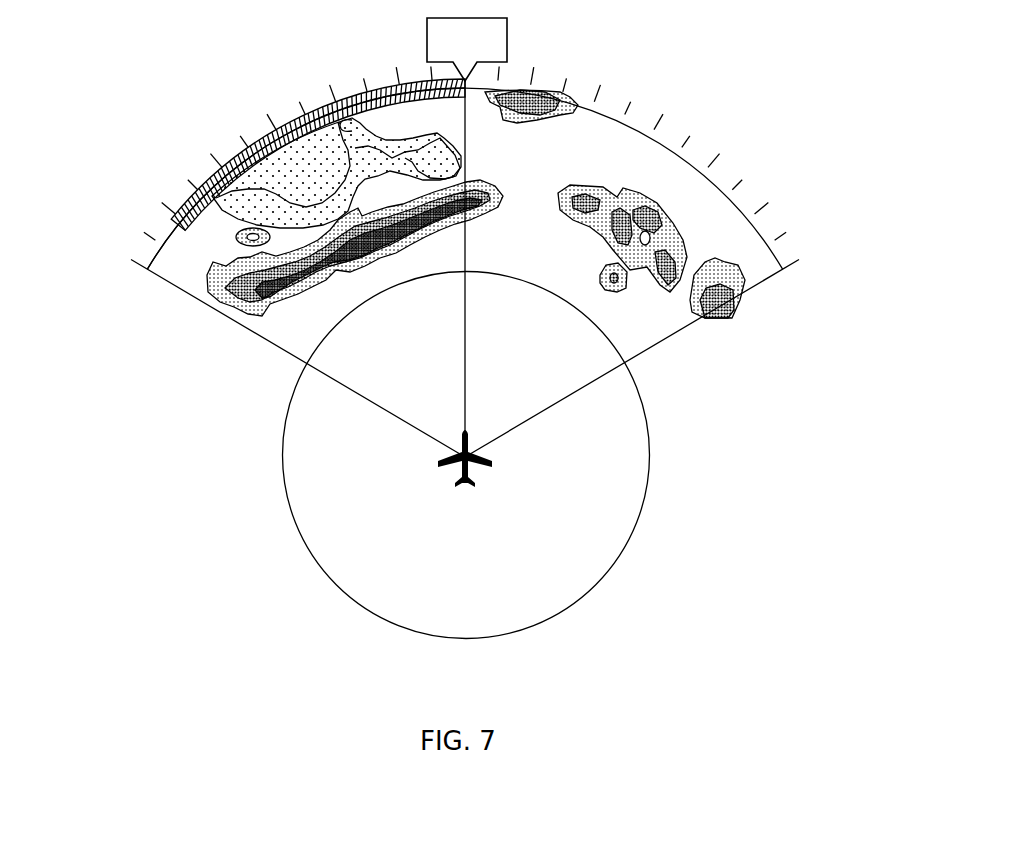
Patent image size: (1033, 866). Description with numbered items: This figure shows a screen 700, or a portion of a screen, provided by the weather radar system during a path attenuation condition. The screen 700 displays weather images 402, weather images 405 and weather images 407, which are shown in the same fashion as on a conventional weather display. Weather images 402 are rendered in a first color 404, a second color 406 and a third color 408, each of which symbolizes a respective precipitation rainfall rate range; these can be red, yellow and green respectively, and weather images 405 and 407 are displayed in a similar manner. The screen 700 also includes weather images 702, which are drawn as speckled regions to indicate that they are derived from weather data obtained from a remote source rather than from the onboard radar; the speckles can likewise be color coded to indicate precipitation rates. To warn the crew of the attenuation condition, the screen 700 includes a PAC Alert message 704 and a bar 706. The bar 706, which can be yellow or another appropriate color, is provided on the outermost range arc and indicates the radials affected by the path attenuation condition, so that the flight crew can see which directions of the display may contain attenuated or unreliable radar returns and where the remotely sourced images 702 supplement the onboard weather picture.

The screen 700 is at (689, 46).
The weather images 702 is at (236, 142).
The PAC Alert message 704 is at (413, 110).
The bar 706 is at (196, 204).
The weather images 402 is at (350, 307).
The first color 404 is at (258, 290).
The weather images 405 is at (626, 196).
The second color 406 is at (385, 261).
The weather images 407 is at (537, 98).
The third color 408 is at (492, 187).